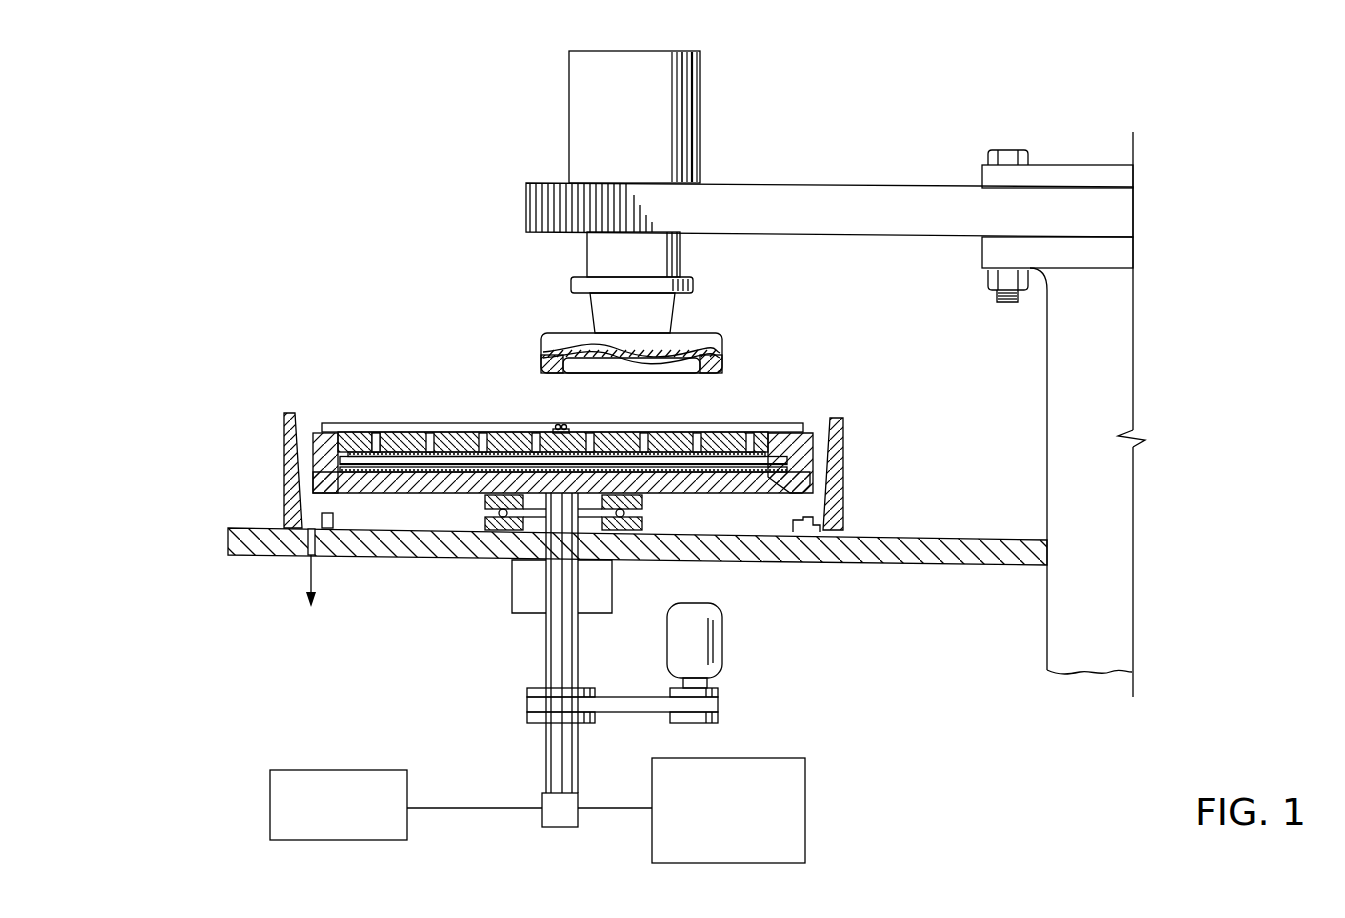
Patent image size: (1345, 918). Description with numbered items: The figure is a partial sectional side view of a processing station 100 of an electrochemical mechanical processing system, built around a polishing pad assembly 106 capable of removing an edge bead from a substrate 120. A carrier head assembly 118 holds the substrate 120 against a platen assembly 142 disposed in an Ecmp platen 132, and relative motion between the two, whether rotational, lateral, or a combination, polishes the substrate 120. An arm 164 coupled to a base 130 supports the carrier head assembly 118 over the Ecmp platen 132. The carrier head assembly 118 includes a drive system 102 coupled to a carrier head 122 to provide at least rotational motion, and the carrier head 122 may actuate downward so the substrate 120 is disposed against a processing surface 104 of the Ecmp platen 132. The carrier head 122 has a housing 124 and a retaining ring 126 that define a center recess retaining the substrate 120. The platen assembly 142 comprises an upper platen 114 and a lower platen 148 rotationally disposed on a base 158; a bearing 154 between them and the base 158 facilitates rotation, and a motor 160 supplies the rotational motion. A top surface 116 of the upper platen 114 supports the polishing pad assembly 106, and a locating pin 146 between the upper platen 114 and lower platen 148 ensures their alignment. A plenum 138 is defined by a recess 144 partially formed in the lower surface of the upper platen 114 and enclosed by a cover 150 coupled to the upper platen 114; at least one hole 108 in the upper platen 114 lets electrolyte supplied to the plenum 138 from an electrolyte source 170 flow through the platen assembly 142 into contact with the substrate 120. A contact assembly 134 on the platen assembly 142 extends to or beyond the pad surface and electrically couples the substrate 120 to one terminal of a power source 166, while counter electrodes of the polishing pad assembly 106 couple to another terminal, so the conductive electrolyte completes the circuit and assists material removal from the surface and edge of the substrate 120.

The processing station 100 is at (315, 178).
The drive system 102 is at (569, 105).
The processing surface 104 is at (422, 427).
The polishing pad assembly 106 is at (480, 420).
The hole 108 is at (362, 433).
The upper platen 114 is at (320, 436).
The top surface 116 is at (343, 430).
The carrier head assembly 118 is at (543, 246).
The substrate 120 is at (585, 363).
The carrier head 122 is at (720, 322).
The housing 124 is at (723, 348).
The retaining ring 126 is at (723, 368).
The base 130 is at (1047, 440).
The Ecmp platen 132 is at (220, 308).
The contact assembly 134 is at (557, 430).
The plenum 138 is at (763, 453).
The platen assembly 142 is at (832, 450).
The recess 144 is at (785, 462).
The locating pin 146 is at (322, 462).
The lower platen 148 is at (322, 486).
The cover 150 is at (637, 465).
The bearing 154 is at (642, 518).
The base 158 is at (940, 566).
The motor 160 is at (722, 637).
The arm 164 is at (790, 184).
The power source 166 is at (270, 808).
The electrolyte source 170 is at (805, 795).